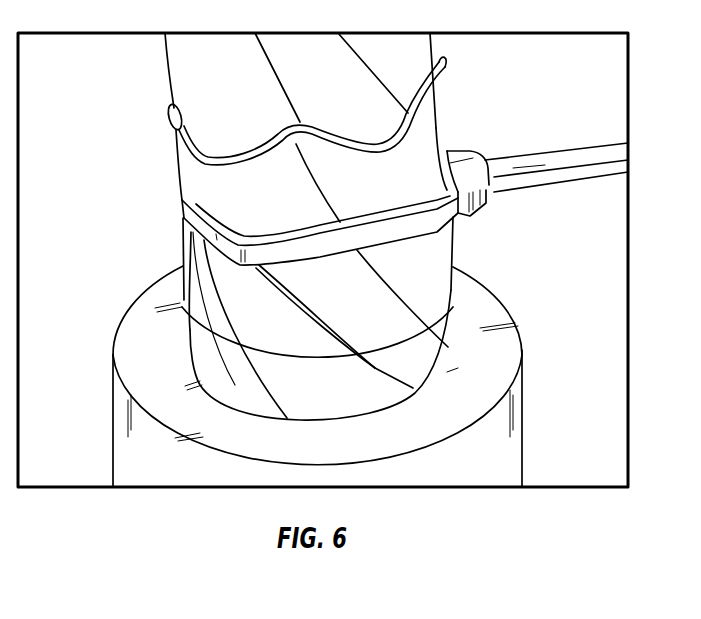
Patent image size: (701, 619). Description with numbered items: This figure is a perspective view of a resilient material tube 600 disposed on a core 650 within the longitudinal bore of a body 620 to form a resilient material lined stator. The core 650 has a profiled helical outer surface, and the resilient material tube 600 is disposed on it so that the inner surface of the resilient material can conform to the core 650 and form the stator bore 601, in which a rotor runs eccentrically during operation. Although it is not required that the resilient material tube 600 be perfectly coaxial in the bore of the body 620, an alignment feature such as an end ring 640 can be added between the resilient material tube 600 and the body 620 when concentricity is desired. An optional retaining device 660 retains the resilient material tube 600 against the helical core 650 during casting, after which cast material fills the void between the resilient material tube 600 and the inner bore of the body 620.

The resilient material tube 600 is at (233, 175).
The stator bore 601 is at (179, 124).
The body 620 is at (508, 458).
The end ring 640 is at (180, 352).
The core 650 is at (405, 45).
The retaining device 660 is at (410, 229).